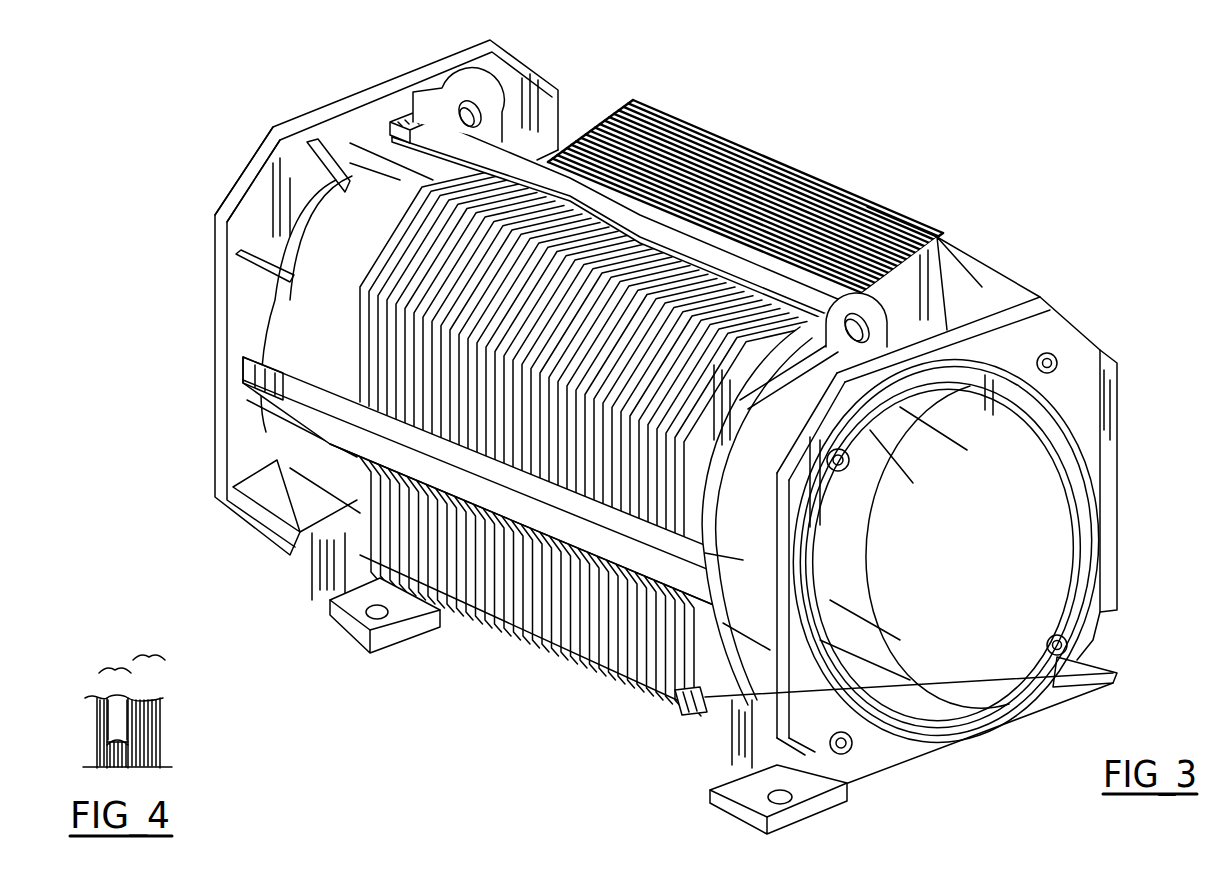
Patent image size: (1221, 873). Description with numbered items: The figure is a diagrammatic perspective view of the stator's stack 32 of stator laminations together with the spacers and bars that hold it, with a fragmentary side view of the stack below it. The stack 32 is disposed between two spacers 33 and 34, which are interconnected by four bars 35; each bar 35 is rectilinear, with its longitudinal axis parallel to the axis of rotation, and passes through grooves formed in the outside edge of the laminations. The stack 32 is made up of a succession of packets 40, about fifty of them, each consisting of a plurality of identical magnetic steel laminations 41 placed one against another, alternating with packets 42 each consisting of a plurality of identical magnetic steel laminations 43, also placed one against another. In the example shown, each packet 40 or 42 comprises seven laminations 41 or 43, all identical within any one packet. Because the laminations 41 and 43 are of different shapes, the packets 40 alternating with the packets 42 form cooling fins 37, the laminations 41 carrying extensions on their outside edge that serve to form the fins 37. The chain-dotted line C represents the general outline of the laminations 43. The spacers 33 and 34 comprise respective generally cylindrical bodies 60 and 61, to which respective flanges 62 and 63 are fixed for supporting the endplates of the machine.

In FIG. 3, the stack of stator laminations 32 is at (688, 712).
In FIG. 3, the spacer 33 is at (338, 583).
In FIG. 3, the spacer 34 is at (738, 748).
In FIG. 3, the bar 35 is at (397, 118).
In FIG. 3, the cooling fin 37 is at (597, 120).
In FIG. 4, the packet 40 is at (127, 696).
In FIG. 4, the magnetic steel lamination 41 is at (97, 717).
In FIG. 4, the packet 42 is at (115, 690).
In FIG. 4, the magnetic steel lamination 43 is at (97, 750).
In FIG. 3, the cylindrical body 60 is at (310, 257).
In FIG. 3, the cylindrical body 61 is at (762, 470).
In FIG. 3, the flange 62 is at (258, 157).
In FIG. 3, the flange 63 is at (1033, 327).
In FIG. 4, the chain-dotted line C is at (97, 738).